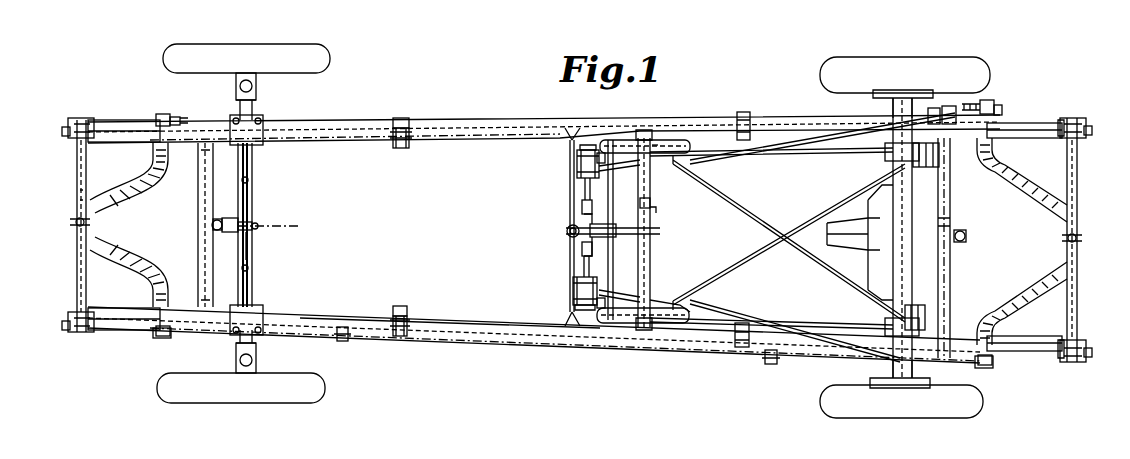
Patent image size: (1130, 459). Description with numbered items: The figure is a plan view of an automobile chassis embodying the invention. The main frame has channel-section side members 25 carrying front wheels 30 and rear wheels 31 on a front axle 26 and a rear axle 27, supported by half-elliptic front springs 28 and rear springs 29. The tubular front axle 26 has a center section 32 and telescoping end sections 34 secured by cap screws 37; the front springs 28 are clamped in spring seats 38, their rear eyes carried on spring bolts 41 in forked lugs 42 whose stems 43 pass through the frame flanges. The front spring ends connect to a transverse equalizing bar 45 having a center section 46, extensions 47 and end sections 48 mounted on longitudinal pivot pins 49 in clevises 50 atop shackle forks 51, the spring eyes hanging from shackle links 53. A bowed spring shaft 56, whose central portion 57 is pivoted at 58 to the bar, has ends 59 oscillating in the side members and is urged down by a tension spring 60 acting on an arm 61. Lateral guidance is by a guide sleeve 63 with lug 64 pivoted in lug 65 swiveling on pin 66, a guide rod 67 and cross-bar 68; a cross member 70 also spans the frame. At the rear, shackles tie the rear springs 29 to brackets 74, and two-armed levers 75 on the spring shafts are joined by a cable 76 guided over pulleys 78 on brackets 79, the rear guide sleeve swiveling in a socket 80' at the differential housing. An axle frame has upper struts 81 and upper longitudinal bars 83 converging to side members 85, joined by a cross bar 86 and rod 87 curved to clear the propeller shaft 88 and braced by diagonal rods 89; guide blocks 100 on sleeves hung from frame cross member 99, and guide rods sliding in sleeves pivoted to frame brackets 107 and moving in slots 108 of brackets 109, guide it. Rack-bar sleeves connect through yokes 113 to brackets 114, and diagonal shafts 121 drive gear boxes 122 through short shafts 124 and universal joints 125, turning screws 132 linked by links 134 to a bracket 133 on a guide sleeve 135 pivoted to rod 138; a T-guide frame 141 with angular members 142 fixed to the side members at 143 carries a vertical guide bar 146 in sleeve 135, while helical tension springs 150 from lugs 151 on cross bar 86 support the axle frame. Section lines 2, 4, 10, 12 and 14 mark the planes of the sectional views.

The side members 25 is at (472, 130).
The front axle 26 is at (256, 275).
The rear axle 27 is at (892, 272).
The front springs 28 is at (120, 128).
The rear springs 29 is at (1040, 138).
The front wheels 30 is at (290, 52).
The rear wheels 31 is at (860, 64).
The center section 32 is at (250, 232).
The end sections 34 is at (253, 187).
The cap screws 37 is at (248, 181).
The spring seats 38 is at (264, 120).
The spring bolts 41 is at (402, 118).
The forked lugs 42 is at (408, 142).
The stems 43 is at (410, 130).
The equalizing bar 45 is at (72, 257).
The center section 46 is at (78, 192).
The extensions 47 is at (1055, 264).
The end sections 48 is at (78, 160).
The pivot pins 49 is at (70, 132).
The clevises 50 is at (82, 120).
The shackle forks 51 is at (88, 117).
The shackle links 53 is at (1058, 125).
The spring shaft 56 is at (118, 258).
The central portion 57 is at (77, 240).
The pivotal connection 58 is at (75, 218).
The ends 59 is at (163, 114).
The tension spring 60 is at (186, 124).
The arm 61 is at (176, 118).
The guide sleeve 63 is at (214, 232).
The lug 64 is at (243, 222).
The lug 65 is at (250, 232).
The pin 66 is at (256, 229).
The guide rod 67 is at (217, 219).
The cross-bar 68 is at (199, 212).
The cross member 70 is at (199, 188).
The brackets 74 is at (740, 118).
The two-armed lever 75 is at (155, 333).
The cable 76 is at (300, 333).
The pulleys 78 is at (343, 326).
The brackets 79 is at (343, 342).
The socket 80' is at (875, 242).
The upper struts 81 is at (886, 155).
The upper longitudinal bars 83 is at (817, 156).
The side member 85 is at (678, 145).
The cross bar 86 is at (651, 265).
The rod 87 is at (614, 211).
The propeller shaft 88 is at (827, 236).
The diagonal rods 89 is at (800, 218).
The frame cross member 99 is at (951, 222).
The guide block 100 is at (927, 167).
The frame bracket 107 is at (638, 133).
The slots 108 is at (648, 303).
The frame brackets 109 is at (654, 147).
The yoke 113 is at (950, 106).
The bracket 114 is at (935, 108).
The shaft 121 is at (802, 142).
The gear box 122 is at (577, 165).
The short shaft 124 is at (600, 140).
The universal joint 125 is at (622, 172).
The screw 132 is at (583, 190).
The bracket 133 is at (582, 258).
The link 134 is at (582, 208).
The guide sleeve 135 is at (571, 236).
The rod 138 is at (650, 231).
The frame 141 is at (571, 296).
The angular members 142 is at (577, 154).
The connection 143 is at (570, 142).
The vertical guide bar 146 is at (568, 227).
The helical tension springs 150 is at (656, 210).
The lugs 151 is at (650, 203).
The section line 2 is at (85, 331).
The section line 4 is at (80, 222).
The section line 10 is at (562, 230).
The section line 12 is at (1033, 43).
The section line 14 is at (657, 160).